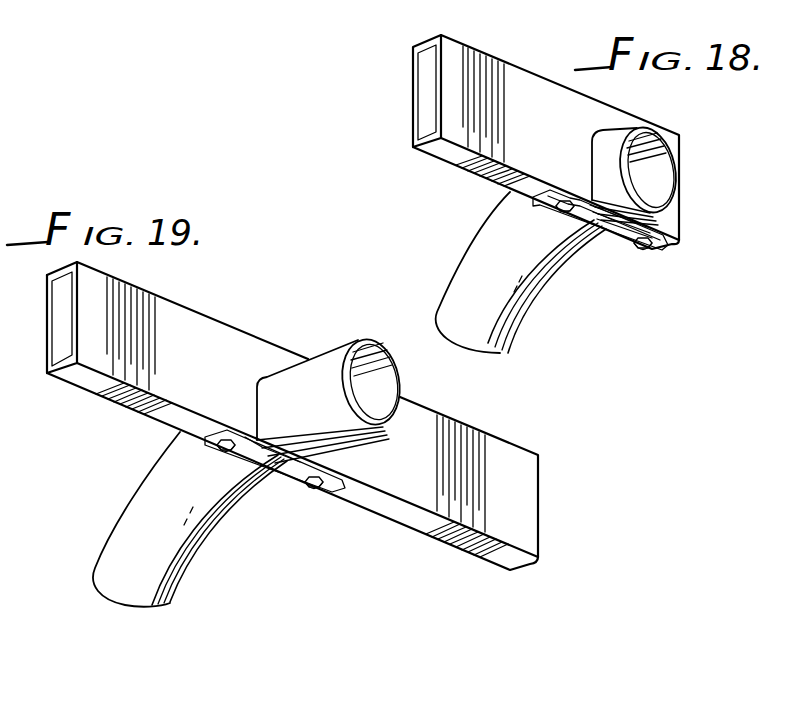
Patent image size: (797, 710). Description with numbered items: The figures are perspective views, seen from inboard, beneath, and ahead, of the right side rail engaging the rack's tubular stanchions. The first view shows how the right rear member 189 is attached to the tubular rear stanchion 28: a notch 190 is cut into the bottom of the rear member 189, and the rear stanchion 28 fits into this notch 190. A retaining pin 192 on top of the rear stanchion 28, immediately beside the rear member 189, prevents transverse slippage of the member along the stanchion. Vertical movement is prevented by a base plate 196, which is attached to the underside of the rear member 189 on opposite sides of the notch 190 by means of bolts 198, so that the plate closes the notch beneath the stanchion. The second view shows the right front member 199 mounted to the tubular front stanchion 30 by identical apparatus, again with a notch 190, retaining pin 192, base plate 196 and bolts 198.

In FIG. 18, the rear stanchion 28 is at (456, 261).
In FIG. 19, the front stanchion 30 is at (134, 488).
In FIG. 18, the right rear member 189 is at (486, 56).
In FIG. 19, the right front member 199 is at (193, 312).
In FIG. 18, the notch 190 is at (592, 158).
In FIG. 19, the notch 190 is at (258, 398).
In FIG. 18, the retaining pin 192 is at (612, 132).
In FIG. 19, the retaining pin 192 is at (278, 371).
In FIG. 18, the base plate 196 is at (617, 245).
In FIG. 19, the base plate 196 is at (275, 482).
In FIG. 18, the bolts 198 is at (556, 212).
In FIG. 19, the bolts 198 is at (224, 452).